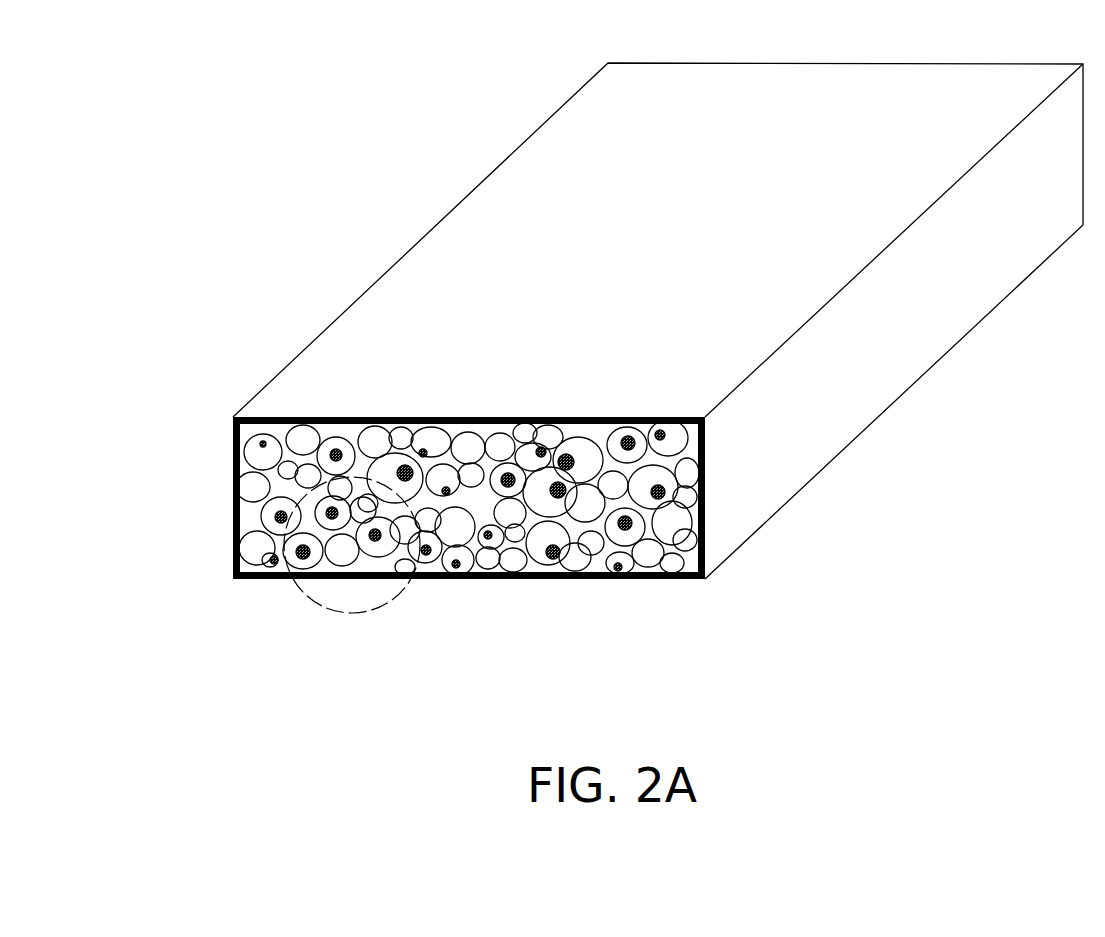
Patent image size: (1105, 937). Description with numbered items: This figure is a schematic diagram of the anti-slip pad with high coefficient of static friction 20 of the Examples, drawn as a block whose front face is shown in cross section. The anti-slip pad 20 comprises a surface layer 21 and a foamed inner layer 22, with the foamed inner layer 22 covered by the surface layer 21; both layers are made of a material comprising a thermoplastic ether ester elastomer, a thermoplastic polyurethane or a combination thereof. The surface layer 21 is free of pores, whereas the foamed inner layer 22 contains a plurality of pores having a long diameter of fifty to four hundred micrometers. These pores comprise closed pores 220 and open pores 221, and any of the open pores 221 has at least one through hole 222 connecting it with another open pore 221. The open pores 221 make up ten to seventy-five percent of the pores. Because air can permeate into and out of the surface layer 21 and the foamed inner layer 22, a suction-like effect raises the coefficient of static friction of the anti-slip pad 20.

The anti-slip pad with high coefficient of static friction 20 is at (343, 127).
The surface layer 21 is at (233, 433).
The foamed inner layer 22 is at (360, 463).
The closed pores 220 is at (253, 487).
The open pores 221 is at (257, 548).
The through hole 222 is at (272, 562).